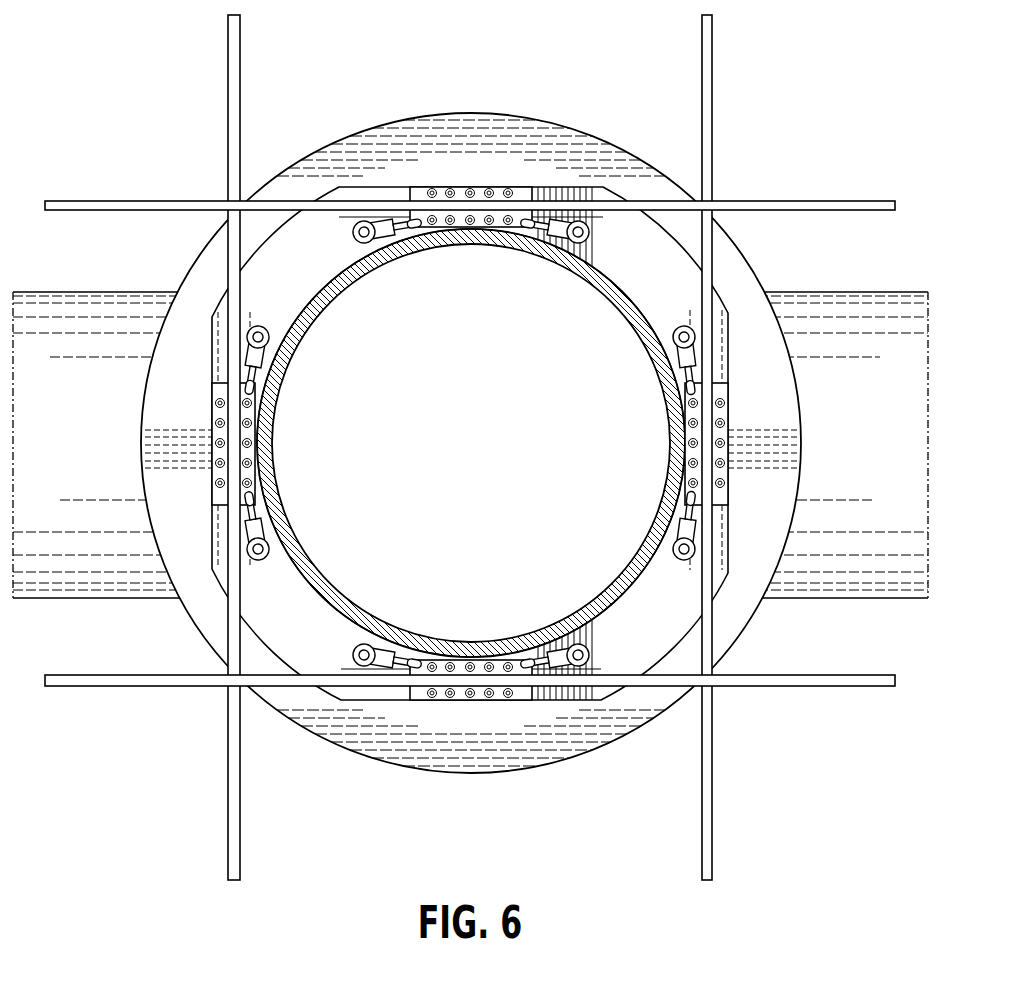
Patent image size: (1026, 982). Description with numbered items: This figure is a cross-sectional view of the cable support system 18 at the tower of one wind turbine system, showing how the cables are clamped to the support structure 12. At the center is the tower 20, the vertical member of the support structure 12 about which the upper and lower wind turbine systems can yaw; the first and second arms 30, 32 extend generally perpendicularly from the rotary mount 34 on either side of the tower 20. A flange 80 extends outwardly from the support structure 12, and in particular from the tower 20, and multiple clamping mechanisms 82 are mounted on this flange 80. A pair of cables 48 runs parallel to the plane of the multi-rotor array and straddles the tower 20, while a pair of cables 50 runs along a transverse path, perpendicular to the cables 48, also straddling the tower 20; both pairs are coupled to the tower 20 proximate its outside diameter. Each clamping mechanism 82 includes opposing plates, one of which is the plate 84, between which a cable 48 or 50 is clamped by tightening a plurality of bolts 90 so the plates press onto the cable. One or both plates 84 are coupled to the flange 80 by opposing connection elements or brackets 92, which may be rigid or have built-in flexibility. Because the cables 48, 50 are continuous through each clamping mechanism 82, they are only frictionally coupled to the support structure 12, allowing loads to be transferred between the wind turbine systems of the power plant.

The support structure 12 is at (312, 295).
The cable support system 18 is at (461, 447).
The tower 20 is at (630, 292).
The first arm 30 is at (58, 291).
The second arm 32 is at (865, 291).
The rotary mount 34 is at (471, 112).
The cable 48 is at (65, 201).
The cable 50 is at (244, 46).
The flange 80 is at (469, 447).
The clamping mechanism 82 is at (422, 187).
The plate 84 is at (522, 190).
The bolt 90 is at (470, 192).
The connection element 92 is at (380, 246).